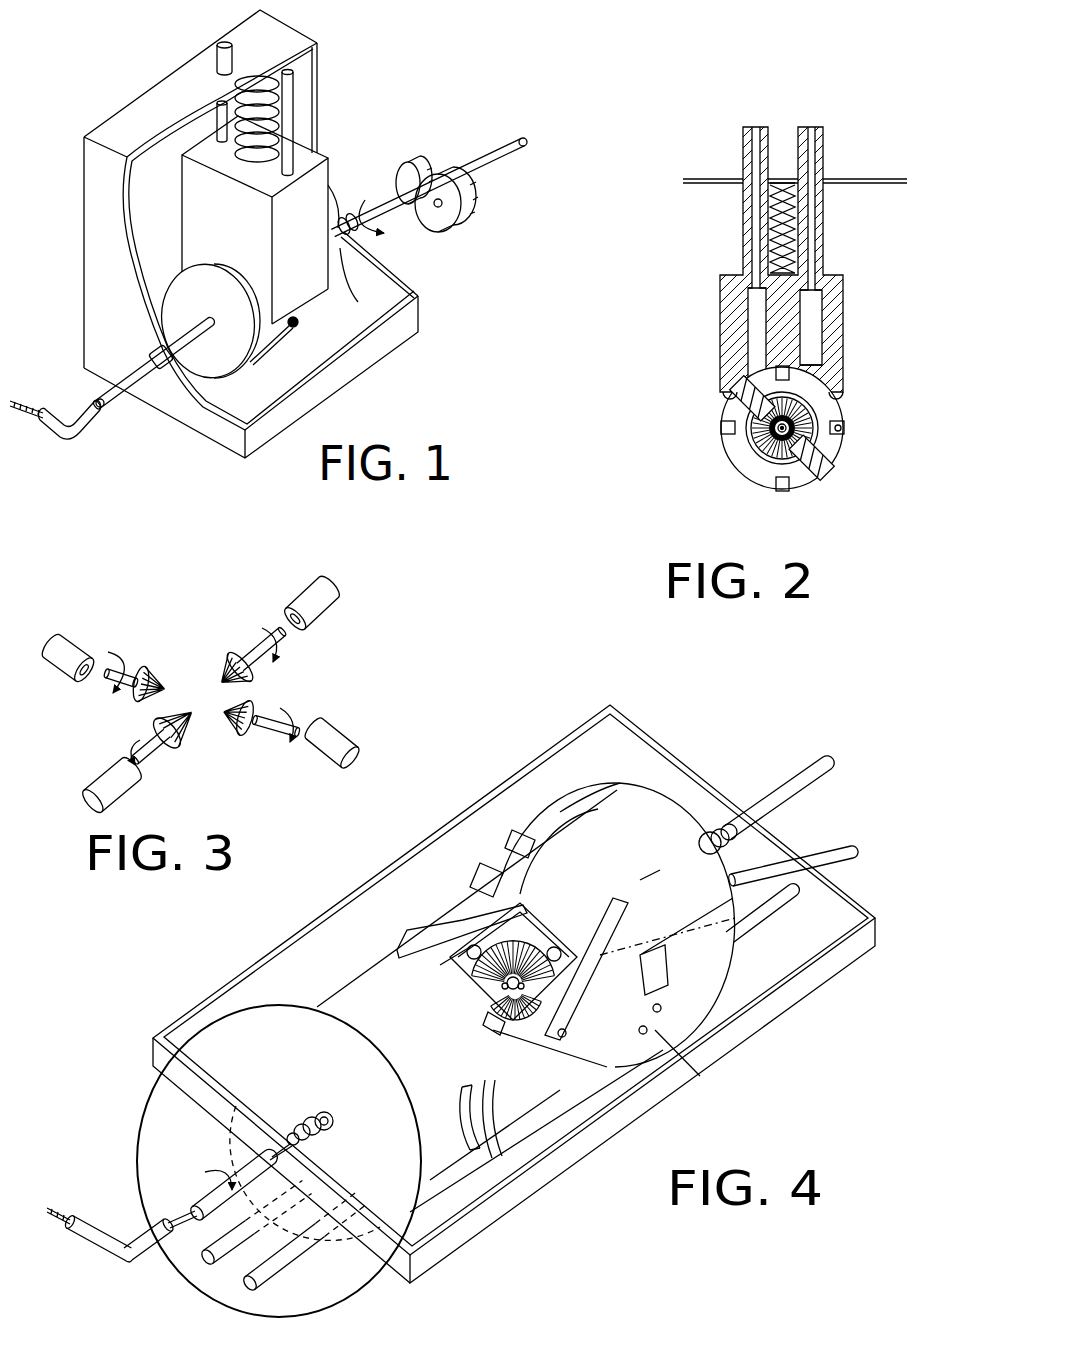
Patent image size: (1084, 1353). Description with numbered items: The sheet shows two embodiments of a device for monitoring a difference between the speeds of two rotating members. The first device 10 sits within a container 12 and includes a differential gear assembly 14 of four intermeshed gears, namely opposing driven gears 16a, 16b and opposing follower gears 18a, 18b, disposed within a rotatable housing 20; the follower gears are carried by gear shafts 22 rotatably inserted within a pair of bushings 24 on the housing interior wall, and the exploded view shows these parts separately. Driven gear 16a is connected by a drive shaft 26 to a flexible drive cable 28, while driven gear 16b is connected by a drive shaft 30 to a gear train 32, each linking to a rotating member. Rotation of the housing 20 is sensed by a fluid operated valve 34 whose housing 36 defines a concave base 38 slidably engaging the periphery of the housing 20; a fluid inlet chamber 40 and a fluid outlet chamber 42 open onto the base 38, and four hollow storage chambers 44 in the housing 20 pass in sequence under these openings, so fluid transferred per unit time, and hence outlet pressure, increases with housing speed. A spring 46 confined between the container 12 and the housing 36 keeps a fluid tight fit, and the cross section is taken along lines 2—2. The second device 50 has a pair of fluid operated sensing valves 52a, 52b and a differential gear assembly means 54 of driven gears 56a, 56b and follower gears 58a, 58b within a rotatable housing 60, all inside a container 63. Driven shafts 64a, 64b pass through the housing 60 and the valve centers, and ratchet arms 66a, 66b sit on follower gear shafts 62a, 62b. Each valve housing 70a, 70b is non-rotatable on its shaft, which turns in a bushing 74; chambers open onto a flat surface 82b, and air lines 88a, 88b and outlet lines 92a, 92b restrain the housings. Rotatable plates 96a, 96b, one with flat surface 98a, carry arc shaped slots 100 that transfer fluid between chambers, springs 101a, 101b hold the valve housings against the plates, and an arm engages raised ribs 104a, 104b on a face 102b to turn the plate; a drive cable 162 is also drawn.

In FIG. 2, the device 10 is at (792, 338).
In FIG. 1, the container 12 is at (90, 291).
In FIG. 2, the container 12 is at (843, 180).
In FIG. 2, the differential gear assembly 14 is at (760, 468).
In FIG. 3, the differential gear assembly 14 is at (200, 695).
In FIG. 3, the driven gear 16a is at (187, 740).
In FIG. 2, the driven gear 16b is at (810, 413).
In FIG. 3, the driven gear 16b is at (232, 660).
In FIG. 2, the follower gear 18a is at (770, 438).
In FIG. 3, the follower gear 18a is at (140, 703).
In FIG. 2, the follower gear 18b is at (835, 448).
In FIG. 3, the follower gear 18b is at (252, 702).
In FIG. 1, the rotatable housing 20 is at (177, 315).
In FIG. 2, the rotatable housing 20 is at (825, 488).
In FIG. 2, the gear shafts 22 is at (757, 410).
In FIG. 3, the gear shafts 22 is at (136, 672).
In FIG. 2, the bushings 24 is at (730, 395).
In FIG. 3, the bushings 24 is at (68, 644).
In FIG. 1, the drive shaft 26 is at (134, 396).
In FIG. 3, the drive shaft 26 is at (143, 765).
In FIG. 1, the flexible drive cable 28 is at (62, 433).
In FIG. 1, the drive shaft 30 is at (386, 234).
In FIG. 3, the drive shaft 30 is at (292, 637).
In FIG. 1, the gear train 32 is at (416, 160).
In FIG. 1, the fluid operated valve 34 is at (270, 176).
In FIG. 2, the fluid operated valve 34 is at (791, 259).
In FIG. 1, the housing 36 is at (196, 205).
In FIG. 2, the housing 36 is at (836, 332).
In FIG. 1, the concave base 38 is at (258, 366).
In FIG. 2, the concave base 38 is at (847, 390).
In FIG. 1, the fluid inlet chamber 40 is at (215, 56).
In FIG. 2, the fluid inlet chamber 40 is at (752, 340).
In FIG. 1, the fluid outlet chamber 42 is at (295, 95).
In FIG. 2, the fluid outlet chamber 42 is at (812, 312).
In FIG. 1, the storage chambers 44 is at (296, 327).
In FIG. 2, the storage chambers 44 is at (845, 430).
In FIG. 1, the spring 46 is at (219, 150).
In FIG. 2, the spring 46 is at (773, 236).
In FIG. 1, the section lines 2 is at (177, 232).
In FIG. 4, the device 50 is at (563, 773).
In FIG. 4, the fluid operated sensing valve 52a is at (266, 1037).
In FIG. 4, the fluid operated sensing valve 52b is at (613, 798).
In FIG. 4, the differential gear assembly means 54 is at (462, 916).
In FIG. 4, the driven gear 56a is at (493, 1017).
In FIG. 4, the driven gear 56b is at (490, 893).
In FIG. 4, the follower gear 58a is at (497, 997).
In FIG. 4, the follower gear 58b is at (503, 1030).
In FIG. 4, the rotatable housing 60 is at (533, 1065).
In FIG. 4, the shaft 62a is at (431, 967).
In FIG. 4, the shaft 62b is at (563, 1037).
In FIG. 4, the container 63 is at (810, 980).
In FIG. 4, the driven shaft 64a is at (302, 1127).
In FIG. 4, the driven shaft 64b is at (745, 839).
In FIG. 4, the ratchet arm 66a is at (430, 925).
In FIG. 4, the ratchet arm 66b is at (624, 937).
In FIG. 4, the valve housing 70a is at (460, 1228).
In FIG. 4, the valve housing 70b is at (573, 807).
In FIG. 4, the bushing 74 is at (332, 1125).
In FIG. 4, the flat surface 82b is at (690, 1077).
In FIG. 4, the air line 88a is at (218, 1263).
In FIG. 4, the air line 88b is at (735, 876).
In FIG. 4, the air outlet line 92a is at (293, 1258).
In FIG. 4, the air outlet line 92b is at (781, 906).
In FIG. 4, the rotatable plate 96a is at (372, 943).
In FIG. 4, the rotatable plate 96b is at (610, 861).
In FIG. 4, the flat surface 98a is at (457, 1108).
In FIG. 4, the slots 100 is at (487, 1157).
In FIG. 4, the spring 101a is at (320, 1110).
In FIG. 4, the spring 101b is at (726, 826).
In FIG. 4, the face 102b is at (510, 837).
In FIG. 4, the raised ribs 104a is at (518, 1103).
In FIG. 4, the raised ribs 104b is at (647, 893).
In FIG. 4, the drive cable 162 is at (113, 1248).